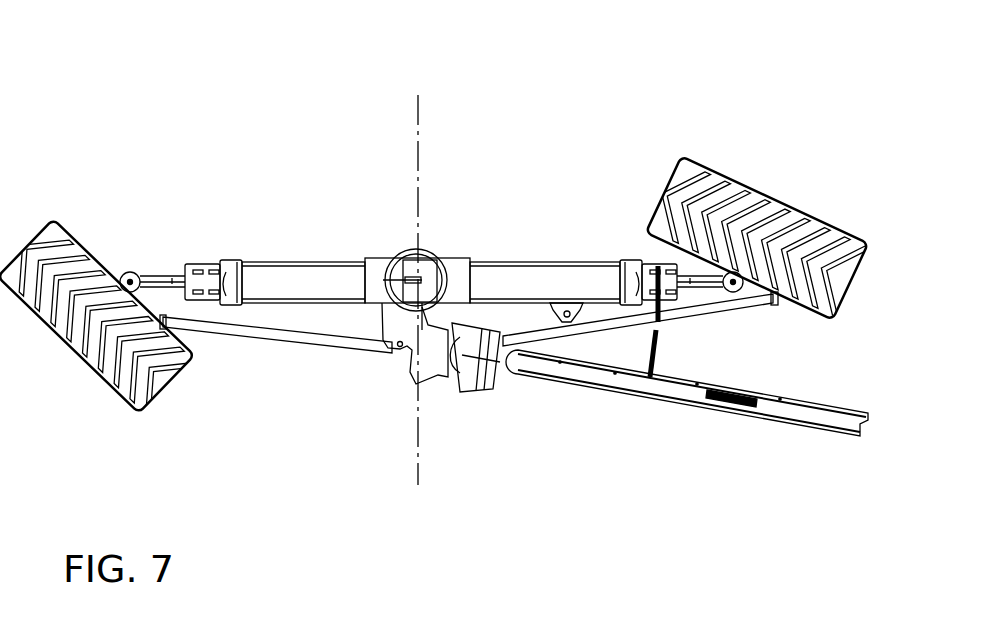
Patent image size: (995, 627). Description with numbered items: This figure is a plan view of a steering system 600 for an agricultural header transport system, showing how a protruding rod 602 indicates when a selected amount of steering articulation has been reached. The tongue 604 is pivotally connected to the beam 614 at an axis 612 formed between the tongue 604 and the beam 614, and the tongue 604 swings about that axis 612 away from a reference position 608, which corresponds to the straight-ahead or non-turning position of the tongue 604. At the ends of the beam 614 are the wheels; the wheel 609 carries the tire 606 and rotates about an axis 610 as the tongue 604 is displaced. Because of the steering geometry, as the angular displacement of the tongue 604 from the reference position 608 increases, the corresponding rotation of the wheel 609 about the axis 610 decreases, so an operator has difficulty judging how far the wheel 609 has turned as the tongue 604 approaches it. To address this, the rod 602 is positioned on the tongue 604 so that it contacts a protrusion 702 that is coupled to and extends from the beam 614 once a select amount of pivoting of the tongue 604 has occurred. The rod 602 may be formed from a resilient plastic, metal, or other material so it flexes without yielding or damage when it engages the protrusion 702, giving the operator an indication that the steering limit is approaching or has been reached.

The steering system 600 is at (265, 84).
The rod 602 is at (648, 350).
The tongue 604 is at (802, 413).
The tire 606 is at (760, 207).
The wheel 609 is at (783, 207).
The reference position 608 is at (415, 470).
The axis 610 is at (742, 290).
The axis 612 is at (395, 350).
The beam 614 is at (528, 275).
The protrusion 702 is at (633, 272).